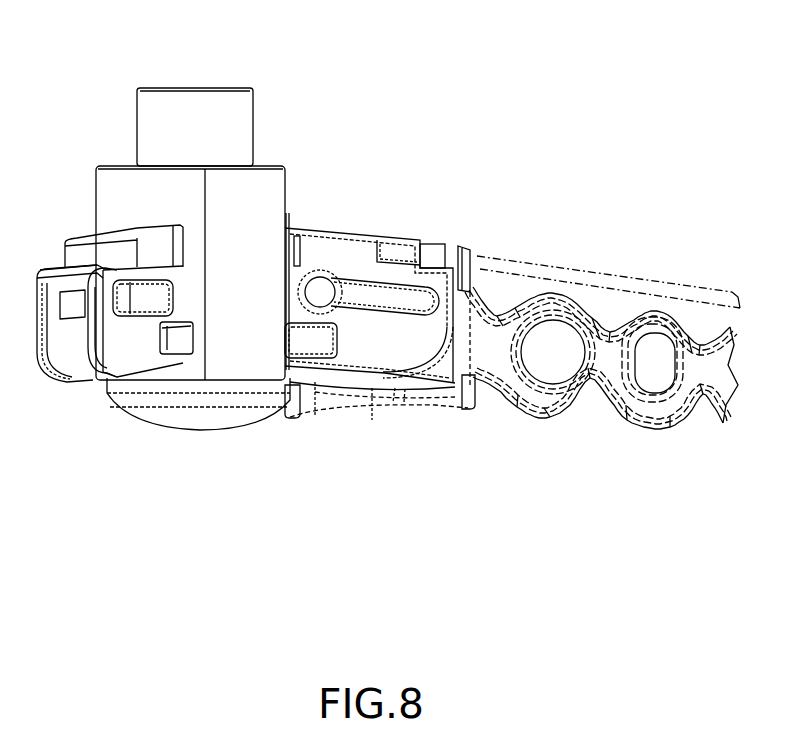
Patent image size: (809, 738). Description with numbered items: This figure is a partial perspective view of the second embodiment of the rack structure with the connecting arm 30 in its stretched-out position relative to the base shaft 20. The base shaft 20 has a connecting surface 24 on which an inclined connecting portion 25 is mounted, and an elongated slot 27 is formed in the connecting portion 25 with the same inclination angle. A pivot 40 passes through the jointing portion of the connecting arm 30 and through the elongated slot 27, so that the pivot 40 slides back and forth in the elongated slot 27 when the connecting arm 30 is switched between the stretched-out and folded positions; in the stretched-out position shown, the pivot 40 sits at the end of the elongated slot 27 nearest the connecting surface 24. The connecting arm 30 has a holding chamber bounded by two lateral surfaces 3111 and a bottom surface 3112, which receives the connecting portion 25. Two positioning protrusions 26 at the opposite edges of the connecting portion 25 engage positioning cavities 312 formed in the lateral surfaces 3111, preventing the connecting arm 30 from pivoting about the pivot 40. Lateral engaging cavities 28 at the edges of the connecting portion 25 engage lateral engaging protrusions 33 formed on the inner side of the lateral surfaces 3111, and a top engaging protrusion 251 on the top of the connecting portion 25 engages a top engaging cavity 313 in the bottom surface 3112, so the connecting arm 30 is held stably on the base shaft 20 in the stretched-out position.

The base shaft 20 is at (121, 131).
The connecting surface 24 is at (285, 187).
The connecting portion 25 is at (365, 235).
The top engaging protrusion 251 is at (408, 240).
The positioning protrusion 26 is at (300, 350).
The elongated slot 27 is at (398, 303).
The lateral engaging cavity 28 is at (176, 245).
The connecting arm 30 is at (567, 259).
The positioning cavity 312 is at (373, 372).
The top engaging cavity 313 is at (440, 247).
The lateral surface 3111 is at (318, 382).
The bottom surface 3112 is at (457, 333).
The lateral engaging protrusion 33 is at (300, 230).
The pivot 40 is at (318, 290).